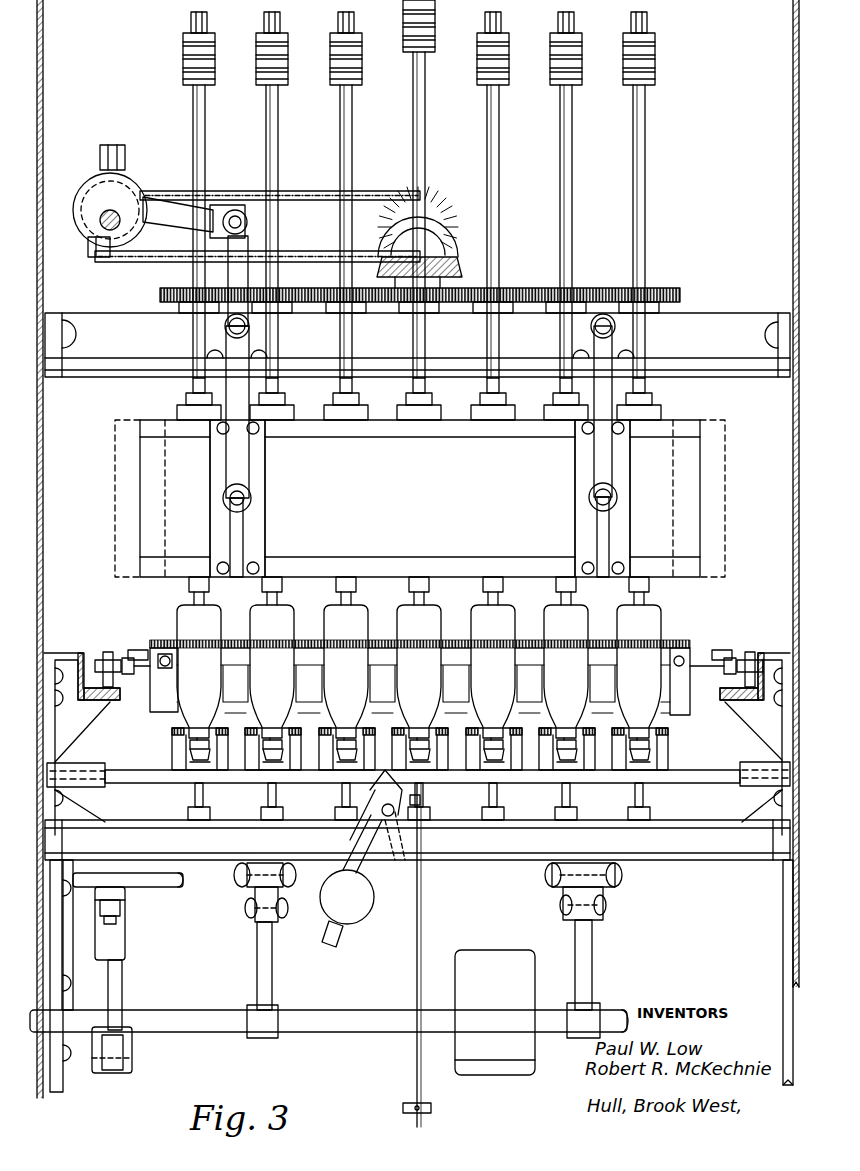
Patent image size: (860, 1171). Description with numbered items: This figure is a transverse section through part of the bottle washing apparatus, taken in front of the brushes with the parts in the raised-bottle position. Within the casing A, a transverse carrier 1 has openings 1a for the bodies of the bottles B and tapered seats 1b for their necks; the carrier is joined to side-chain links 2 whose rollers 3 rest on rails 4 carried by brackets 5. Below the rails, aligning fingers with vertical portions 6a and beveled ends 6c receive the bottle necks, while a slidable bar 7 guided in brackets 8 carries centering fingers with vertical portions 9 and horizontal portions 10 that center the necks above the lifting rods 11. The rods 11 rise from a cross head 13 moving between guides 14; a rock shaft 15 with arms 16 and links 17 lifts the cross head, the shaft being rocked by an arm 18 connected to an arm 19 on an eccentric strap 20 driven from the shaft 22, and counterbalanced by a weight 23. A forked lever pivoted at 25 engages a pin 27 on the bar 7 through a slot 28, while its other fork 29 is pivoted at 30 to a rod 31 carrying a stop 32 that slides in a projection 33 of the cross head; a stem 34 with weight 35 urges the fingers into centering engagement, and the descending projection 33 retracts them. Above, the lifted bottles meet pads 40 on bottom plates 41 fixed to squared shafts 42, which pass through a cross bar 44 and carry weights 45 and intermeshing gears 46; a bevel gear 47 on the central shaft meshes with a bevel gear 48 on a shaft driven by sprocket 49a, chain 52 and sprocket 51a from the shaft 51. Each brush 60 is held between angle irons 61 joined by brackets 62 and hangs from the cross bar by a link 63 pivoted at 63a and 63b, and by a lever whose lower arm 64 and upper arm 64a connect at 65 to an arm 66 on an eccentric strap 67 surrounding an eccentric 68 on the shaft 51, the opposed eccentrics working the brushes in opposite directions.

The casing A is at (45, 97).
The weights 45 is at (182, 62).
The squared shaft 42 is at (205, 130).
The gear 46 is at (160, 297).
The cross bar 44 is at (417, 345).
The pads 40 is at (330, 408).
The bottom plates 41 is at (420, 412).
The brush 60 is at (420, 498).
The angle irons 61 is at (474, 428).
The brackets 62 is at (270, 528).
The link 63 is at (598, 462).
The pivot 63a is at (250, 326).
The pin 63b is at (251, 498).
The lower arm of lever 64 is at (240, 455).
The upper arm of lever 64a is at (246, 244).
The pivot 65 is at (240, 208).
The arm 66 is at (170, 200).
The eccentric strap 67 is at (92, 178).
The eccentric 68 is at (118, 185).
The shaft 51 is at (100, 226).
The sprocket 51a is at (128, 260).
The chain 52 is at (308, 190).
The sprocket 49a is at (384, 190).
The bevel gear 48 is at (450, 196).
The bevel gear 47 is at (465, 263).
The rails 4 is at (90, 720).
The transverse carrier 1 is at (688, 648).
The openings 1a is at (232, 625).
The tapered seats 1b is at (210, 712).
The bottles B is at (419, 671).
The side-chain links 2 is at (130, 652).
The rollers 3 is at (106, 650).
The brackets 5 is at (72, 655).
The vertical portion of finger 6a is at (330, 745).
The beveled end 6c is at (172, 735).
The bar 7 is at (146, 770).
The brackets 8 is at (80, 762).
The vertical portion of finger 9 is at (208, 782).
The horizontal portion of finger 10 is at (198, 740).
The lifting rods 11 is at (194, 797).
The cross head 13 is at (522, 860).
The guides 14 is at (62, 968).
The rock shaft 15 is at (347, 1008).
The arms 16 is at (270, 952).
The links 17 is at (282, 880).
The arm 18 is at (112, 1074).
The arm 19 is at (122, 982).
The eccentric strap 20 is at (118, 928).
The shaft 22 is at (168, 887).
The weight 23 is at (495, 1012).
The pivot 25 is at (352, 819).
The pin 27 is at (345, 787).
The slot 28 is at (365, 805).
The fork 29 is at (394, 836).
The pivot point 30 is at (422, 797).
The rod 31 is at (422, 915).
The stop 32 is at (405, 1103).
The projection 33 is at (425, 848).
The stem 34 is at (362, 868).
The counterbalancing weight 35 is at (347, 908).